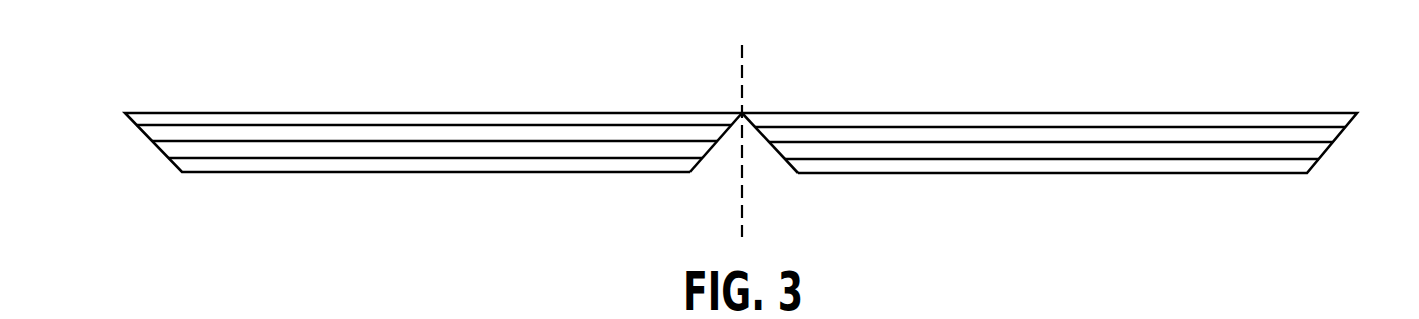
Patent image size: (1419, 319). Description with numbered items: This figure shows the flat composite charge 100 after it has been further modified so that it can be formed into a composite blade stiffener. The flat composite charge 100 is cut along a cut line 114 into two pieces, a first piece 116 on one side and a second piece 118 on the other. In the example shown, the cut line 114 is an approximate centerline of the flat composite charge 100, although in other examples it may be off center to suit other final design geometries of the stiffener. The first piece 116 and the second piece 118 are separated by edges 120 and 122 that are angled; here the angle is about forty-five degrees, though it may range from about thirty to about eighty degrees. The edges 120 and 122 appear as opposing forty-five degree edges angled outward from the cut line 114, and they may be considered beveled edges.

The flat composite charge 100 is at (380, 73).
The cut line 114 is at (741, 73).
The first piece 116 is at (425, 218).
The second piece 118 is at (1062, 218).
The edge 120 is at (718, 183).
The edge 122 is at (772, 183).